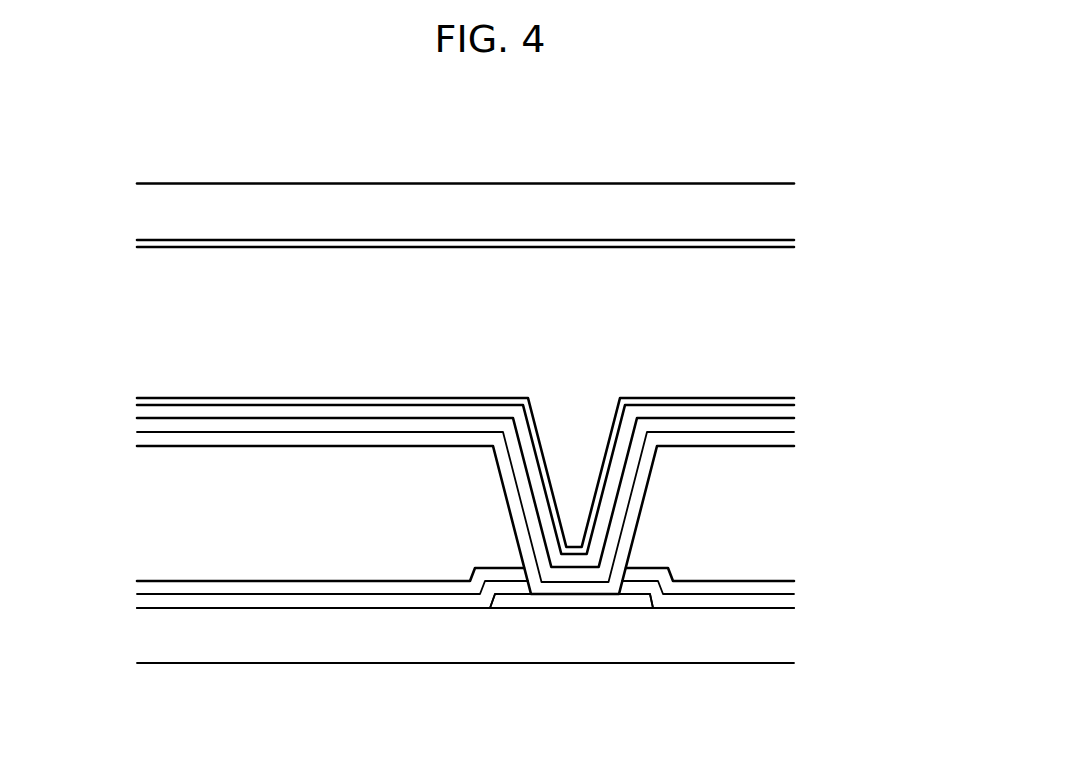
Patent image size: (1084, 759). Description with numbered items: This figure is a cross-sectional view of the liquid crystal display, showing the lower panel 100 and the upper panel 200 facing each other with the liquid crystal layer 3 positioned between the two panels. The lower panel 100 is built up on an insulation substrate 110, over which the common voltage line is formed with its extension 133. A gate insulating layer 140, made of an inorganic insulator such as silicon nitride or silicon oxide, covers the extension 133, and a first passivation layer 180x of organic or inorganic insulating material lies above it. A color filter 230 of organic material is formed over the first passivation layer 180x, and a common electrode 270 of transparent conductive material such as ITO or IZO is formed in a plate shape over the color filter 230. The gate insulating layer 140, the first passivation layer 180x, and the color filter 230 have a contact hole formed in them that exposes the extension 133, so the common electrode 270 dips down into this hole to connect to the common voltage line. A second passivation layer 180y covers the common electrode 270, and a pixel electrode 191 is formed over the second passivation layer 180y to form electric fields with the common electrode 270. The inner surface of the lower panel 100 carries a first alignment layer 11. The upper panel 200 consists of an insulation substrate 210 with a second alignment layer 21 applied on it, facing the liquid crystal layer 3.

The upper panel 200 is at (800, 183).
The insulation substrate 210 is at (193, 203).
The second alignment layer 21 is at (280, 250).
The liquid crystal layer 3 is at (800, 249).
The lower panel 100 is at (800, 399).
The first alignment layer 11 is at (428, 405).
The pixel electrode 191 is at (357, 412).
The second passivation layer 180y is at (672, 423).
The common electrode 270 is at (758, 438).
The color filter 230 is at (285, 560).
The first passivation layer 180x is at (385, 585).
The gate insulating layer 140 is at (465, 602).
The extension 133 is at (560, 597).
The insulation substrate 110 is at (676, 640).